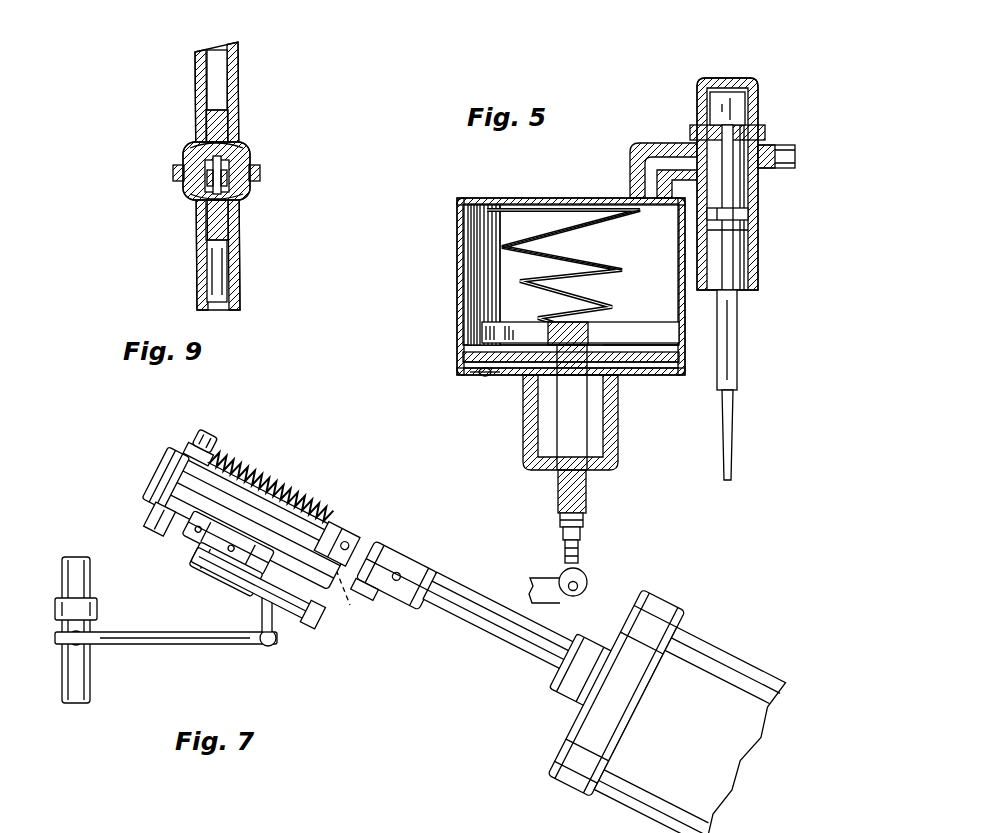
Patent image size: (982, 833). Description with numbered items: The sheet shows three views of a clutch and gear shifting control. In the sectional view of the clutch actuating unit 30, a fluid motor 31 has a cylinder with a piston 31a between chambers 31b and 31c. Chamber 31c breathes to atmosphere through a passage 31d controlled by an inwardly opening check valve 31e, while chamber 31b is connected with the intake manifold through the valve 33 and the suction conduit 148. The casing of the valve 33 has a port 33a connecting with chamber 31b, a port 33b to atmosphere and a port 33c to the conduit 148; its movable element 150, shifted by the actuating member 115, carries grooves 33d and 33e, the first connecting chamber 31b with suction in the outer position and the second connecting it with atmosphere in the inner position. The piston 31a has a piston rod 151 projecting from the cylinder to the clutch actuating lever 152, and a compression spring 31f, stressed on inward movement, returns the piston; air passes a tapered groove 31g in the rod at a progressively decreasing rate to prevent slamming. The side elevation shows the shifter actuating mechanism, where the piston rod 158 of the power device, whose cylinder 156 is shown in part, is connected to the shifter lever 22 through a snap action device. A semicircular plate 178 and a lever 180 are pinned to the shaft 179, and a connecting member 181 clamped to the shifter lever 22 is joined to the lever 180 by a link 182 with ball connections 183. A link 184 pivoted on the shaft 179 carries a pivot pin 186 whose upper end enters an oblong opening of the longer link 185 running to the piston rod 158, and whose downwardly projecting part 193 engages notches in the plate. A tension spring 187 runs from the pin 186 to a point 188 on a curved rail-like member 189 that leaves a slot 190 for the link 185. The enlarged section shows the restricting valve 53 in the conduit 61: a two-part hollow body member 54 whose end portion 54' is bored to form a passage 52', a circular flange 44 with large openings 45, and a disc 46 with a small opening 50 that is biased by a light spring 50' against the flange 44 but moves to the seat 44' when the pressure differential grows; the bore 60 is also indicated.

In FIG. 7, the shifter lever 22 is at (72, 562).
In FIG. 7, the connecting member 181 is at (100, 608).
In FIG. 7, the link 182 is at (200, 614).
In FIG. 7, the ball connections 183 is at (70, 658).
In FIG. 7, the shaft 179 is at (226, 569).
In FIG. 7, the lever 180 is at (262, 600).
In FIG. 7, the semicircular plate 178 is at (257, 586).
In FIG. 7, the link 184 is at (228, 542).
In FIG. 7, the link 185 is at (247, 520).
In FIG. 7, the pivot pin 186 is at (202, 446).
In FIG. 7, the tension spring 187 is at (272, 487).
In FIG. 7, the point 188 is at (394, 581).
In FIG. 7, the rail-like member 189 is at (337, 544).
In FIG. 7, the slot 190 is at (351, 584).
In FIG. 7, the downwardly projecting part 193 is at (160, 519).
In FIG. 7, the piston rod 158 is at (500, 621).
In FIG. 7, the cylinder 156 is at (655, 702).
In FIG. 5, the clutch actuating lever 152 is at (547, 580).
In FIG. 5, the piston rod 151 is at (558, 484).
In FIG. 5, the clutch actuating unit 30 is at (563, 250).
In FIG. 5, the fluid motor 31 is at (458, 253).
In FIG. 5, the piston 31a is at (657, 368).
In FIG. 5, the chamber 31b is at (478, 202).
In FIG. 5, the chamber 31c is at (632, 366).
In FIG. 5, the passage 31d is at (492, 373).
In FIG. 5, the check valve 31e is at (500, 330).
In FIG. 5, the compression spring 31f is at (623, 273).
In FIG. 5, the tapered groove 31g is at (588, 486).
In FIG. 5, the valve 33 is at (757, 262).
In FIG. 5, the passage or port 33a is at (657, 160).
In FIG. 5, the port 33b is at (752, 236).
In FIG. 5, the port 33c is at (708, 195).
In FIG. 5, the groove 33d is at (753, 127).
In FIG. 5, the groove 33e is at (748, 214).
In FIG. 5, the conduit 148 is at (783, 148).
In FIG. 5, the movable element 150 is at (735, 291).
In FIG. 5, the actuating member 115 is at (735, 431).
In FIG. 9, the circular flange 44 is at (183, 202).
In FIG. 9, the seat 44' is at (242, 139).
In FIG. 9, the openings 45 is at (247, 190).
In FIG. 9, the disc 46 is at (236, 180).
In FIG. 9, the opening 50 is at (245, 171).
In FIG. 9, the spring 50' is at (177, 159).
In FIG. 9, the passage 52' is at (250, 80).
In FIG. 9, the restricting valve 53 is at (275, 179).
In FIG. 9, the hollow body member 54 is at (182, 222).
In FIG. 9, the end portion 54' is at (250, 119).
In FIG. 9, the bore 60 is at (224, 263).
In FIG. 9, the conduit 61 is at (198, 88).